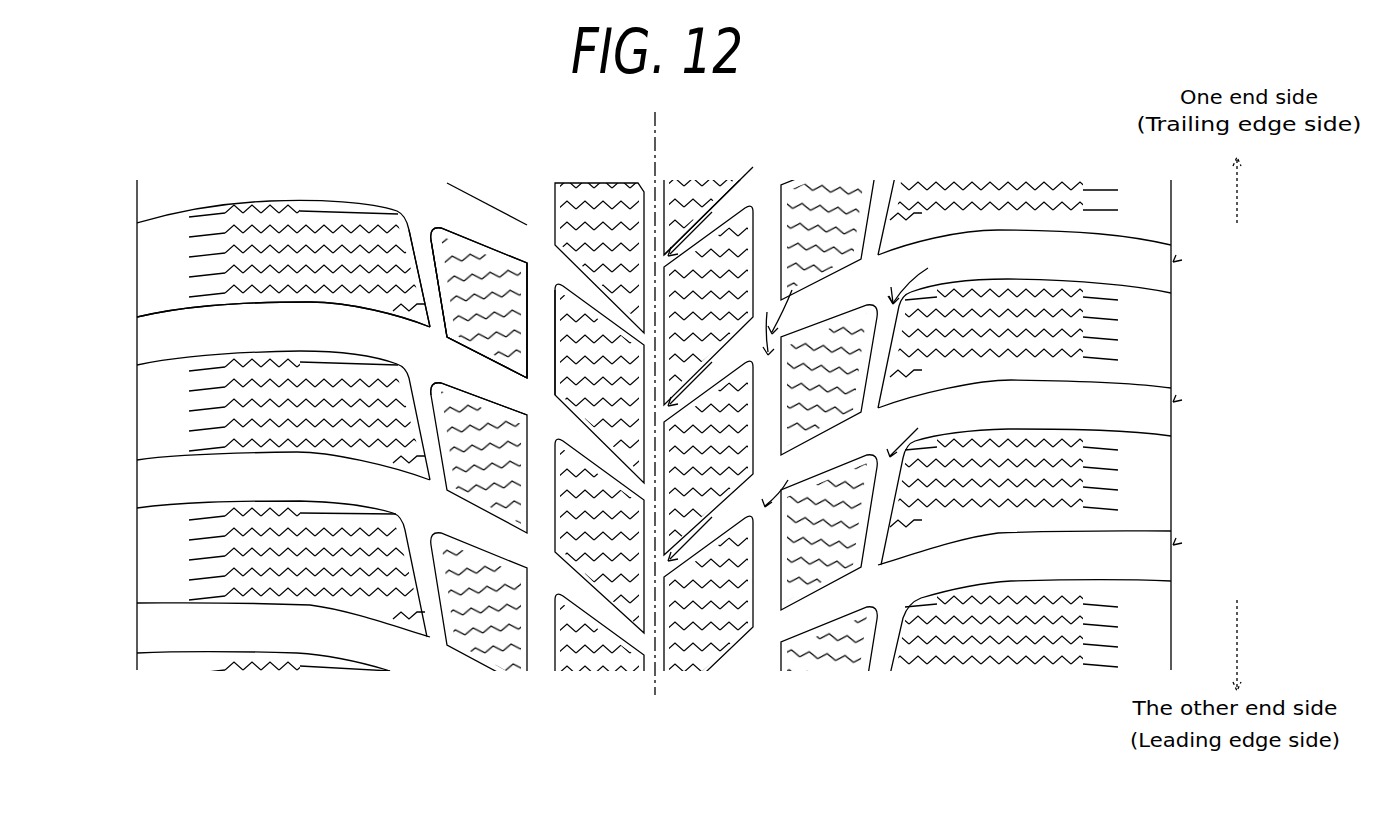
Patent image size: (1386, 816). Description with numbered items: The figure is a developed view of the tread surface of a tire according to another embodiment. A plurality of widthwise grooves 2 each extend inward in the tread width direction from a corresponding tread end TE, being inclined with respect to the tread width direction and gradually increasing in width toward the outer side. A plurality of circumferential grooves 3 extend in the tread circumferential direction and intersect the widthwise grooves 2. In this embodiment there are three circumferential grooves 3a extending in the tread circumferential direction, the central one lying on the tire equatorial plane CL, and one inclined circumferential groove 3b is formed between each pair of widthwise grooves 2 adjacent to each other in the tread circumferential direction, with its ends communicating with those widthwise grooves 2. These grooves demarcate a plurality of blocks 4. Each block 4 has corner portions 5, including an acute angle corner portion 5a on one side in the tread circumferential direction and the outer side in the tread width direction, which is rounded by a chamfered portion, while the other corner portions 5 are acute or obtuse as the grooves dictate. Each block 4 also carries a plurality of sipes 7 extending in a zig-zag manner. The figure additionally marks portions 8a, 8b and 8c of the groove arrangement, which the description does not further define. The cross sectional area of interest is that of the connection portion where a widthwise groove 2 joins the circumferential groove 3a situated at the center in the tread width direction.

The widthwise groove 2 is at (165, 335).
The circumferential groove 3 is at (540, 203).
The circumferential groove 3a is at (766, 213).
The circumferential groove 3b is at (416, 233).
The block 4 is at (487, 326).
The corner portion 5 is at (523, 412).
The acute angle corner portion 5a is at (432, 390).
The sipe 7 is at (727, 225).
The groove flow portion 8a is at (692, 223).
The groove flow portion 8b is at (856, 376).
The groove opening portion 8c is at (1173, 262).
The tread end TE is at (137, 272).
The tire equatorial plane CL is at (655, 392).